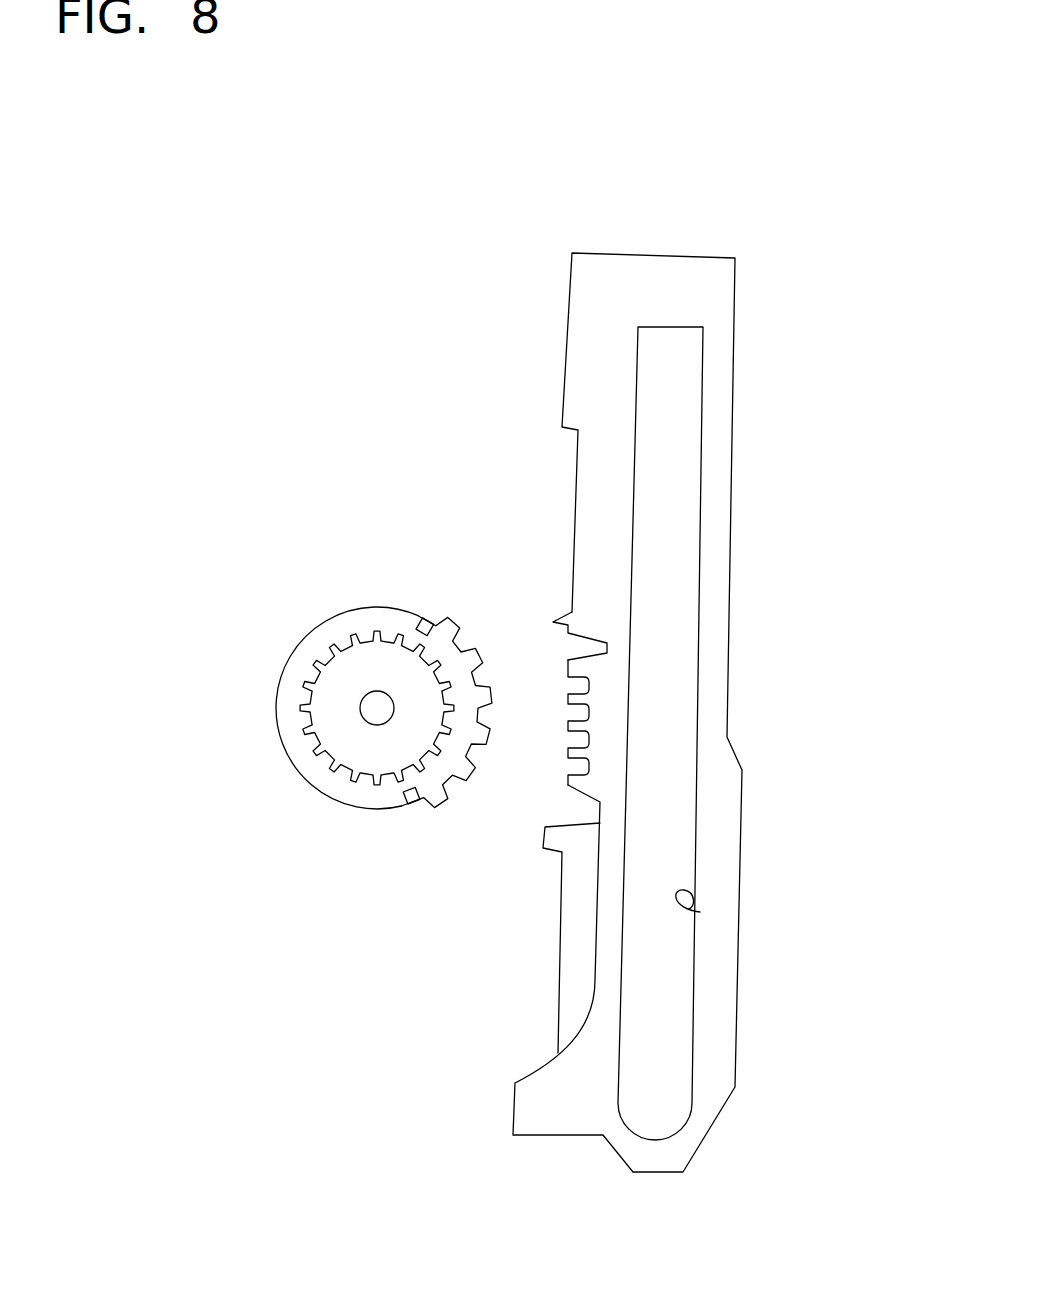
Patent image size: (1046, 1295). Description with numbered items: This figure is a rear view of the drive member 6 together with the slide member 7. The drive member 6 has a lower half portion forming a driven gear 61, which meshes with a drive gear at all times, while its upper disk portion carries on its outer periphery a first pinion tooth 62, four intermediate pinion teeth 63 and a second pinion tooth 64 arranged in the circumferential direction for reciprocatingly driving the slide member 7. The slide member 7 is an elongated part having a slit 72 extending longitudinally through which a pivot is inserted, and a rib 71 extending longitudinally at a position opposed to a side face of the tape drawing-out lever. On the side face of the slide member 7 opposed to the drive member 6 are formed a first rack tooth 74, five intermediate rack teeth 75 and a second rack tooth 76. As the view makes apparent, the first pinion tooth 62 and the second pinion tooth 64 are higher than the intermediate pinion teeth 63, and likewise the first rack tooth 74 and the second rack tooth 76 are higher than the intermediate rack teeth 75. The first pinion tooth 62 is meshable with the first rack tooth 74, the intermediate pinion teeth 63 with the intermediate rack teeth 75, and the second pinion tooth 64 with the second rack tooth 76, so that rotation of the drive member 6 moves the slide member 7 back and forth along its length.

The drive member 6 is at (338, 615).
The driven gear 61 is at (308, 737).
The first pinion tooth 62 is at (436, 806).
The intermediate pinion teeth 63 is at (490, 702).
The second pinion tooth 64 is at (453, 617).
The slide member 7 is at (707, 302).
The rib 71 is at (715, 635).
The slit 72 is at (700, 912).
The first rack tooth 74 is at (543, 848).
The intermediate rack teeth 75 is at (567, 727).
The second rack tooth 76 is at (560, 619).